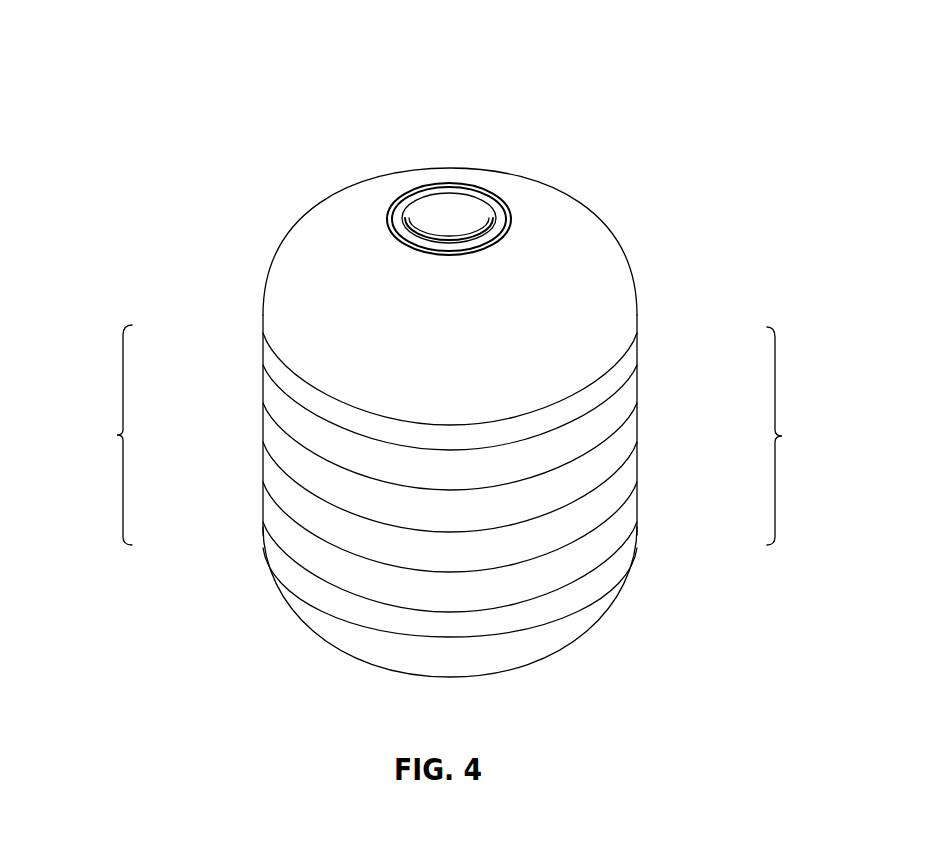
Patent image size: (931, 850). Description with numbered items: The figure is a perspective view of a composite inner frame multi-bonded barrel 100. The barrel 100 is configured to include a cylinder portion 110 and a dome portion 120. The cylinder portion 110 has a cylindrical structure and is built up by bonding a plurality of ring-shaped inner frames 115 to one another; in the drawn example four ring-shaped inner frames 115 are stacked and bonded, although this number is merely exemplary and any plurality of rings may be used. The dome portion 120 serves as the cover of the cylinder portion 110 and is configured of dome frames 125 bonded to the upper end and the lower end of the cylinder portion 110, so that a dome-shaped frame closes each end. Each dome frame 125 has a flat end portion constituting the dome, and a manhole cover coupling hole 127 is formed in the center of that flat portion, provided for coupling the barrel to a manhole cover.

The composite inner frame multi-bonded barrel 100 is at (325, 33).
The cylinder portion 110 is at (796, 436).
The ring-shaped inner frame 115 is at (623, 403).
The dome portion 120 is at (102, 435).
The dome frame 125 is at (313, 307).
The manhole cover coupling hole 127 is at (470, 207).